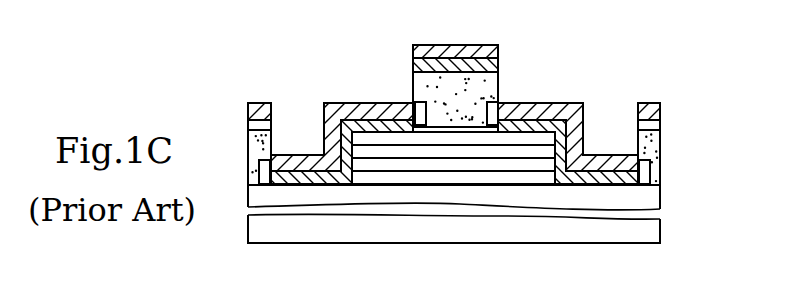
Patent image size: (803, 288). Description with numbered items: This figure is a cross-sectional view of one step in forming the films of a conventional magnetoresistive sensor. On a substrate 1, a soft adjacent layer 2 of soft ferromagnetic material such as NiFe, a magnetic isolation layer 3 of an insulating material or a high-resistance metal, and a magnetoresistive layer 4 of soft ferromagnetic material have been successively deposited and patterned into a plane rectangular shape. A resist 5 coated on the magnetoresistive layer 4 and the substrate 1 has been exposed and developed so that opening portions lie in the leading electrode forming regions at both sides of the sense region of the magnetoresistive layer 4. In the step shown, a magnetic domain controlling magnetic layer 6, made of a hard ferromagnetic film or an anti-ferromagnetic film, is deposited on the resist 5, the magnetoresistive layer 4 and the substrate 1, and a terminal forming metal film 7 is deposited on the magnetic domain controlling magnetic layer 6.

The substrate 1 is at (652, 232).
The soft adjacent layer 2 is at (485, 173).
The magnetic isolation layer 3 is at (393, 162).
The magnetoresistive layer 4 is at (370, 140).
The resist 5 is at (488, 84).
The magnetic domain controlling magnetic layer 6 is at (565, 136).
The terminal forming metal film 7 is at (586, 124).